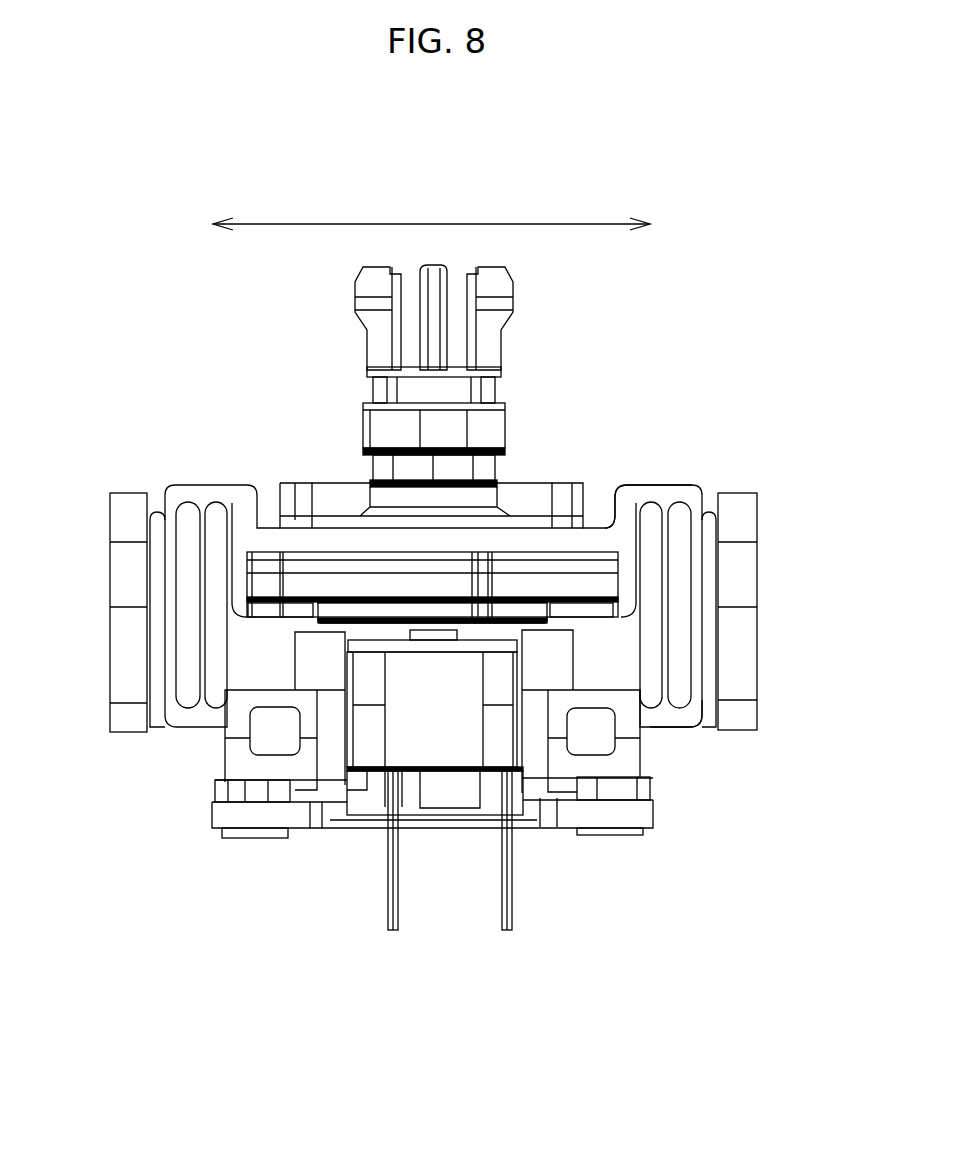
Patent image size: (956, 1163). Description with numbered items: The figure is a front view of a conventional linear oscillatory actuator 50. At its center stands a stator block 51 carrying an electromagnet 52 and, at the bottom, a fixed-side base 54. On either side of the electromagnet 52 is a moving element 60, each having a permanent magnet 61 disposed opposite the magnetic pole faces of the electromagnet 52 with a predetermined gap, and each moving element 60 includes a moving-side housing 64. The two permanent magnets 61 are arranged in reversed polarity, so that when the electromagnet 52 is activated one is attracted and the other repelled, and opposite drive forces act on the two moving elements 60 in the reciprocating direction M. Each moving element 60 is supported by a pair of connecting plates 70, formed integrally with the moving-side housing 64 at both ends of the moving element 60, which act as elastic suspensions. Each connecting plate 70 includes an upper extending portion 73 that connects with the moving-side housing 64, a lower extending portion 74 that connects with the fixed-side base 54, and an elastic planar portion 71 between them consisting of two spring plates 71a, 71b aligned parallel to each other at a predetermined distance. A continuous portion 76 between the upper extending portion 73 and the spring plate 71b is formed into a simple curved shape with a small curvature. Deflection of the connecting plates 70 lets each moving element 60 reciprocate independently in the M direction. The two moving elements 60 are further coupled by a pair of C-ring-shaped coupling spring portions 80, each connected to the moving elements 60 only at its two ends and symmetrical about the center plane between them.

The linear oscillatory actuator 50 is at (178, 353).
The reciprocating direction M is at (431, 222).
The stator block 51 is at (328, 829).
The electromagnet 52 is at (448, 740).
The fixed-side base 54 is at (238, 722).
The moving element 60 is at (552, 485).
The permanent magnet 61 is at (510, 612).
The moving-side housing 64 is at (268, 536).
The connecting plate 70 is at (165, 628).
The elastic planar portion 71 is at (200, 553).
The spring plate 71a is at (699, 584).
The spring plate 71b is at (660, 548).
The upper extending portion 73 is at (661, 497).
The lower extending portion 74 is at (677, 717).
The continuous portion 76 is at (630, 486).
The coupling spring portion 80 is at (120, 685).